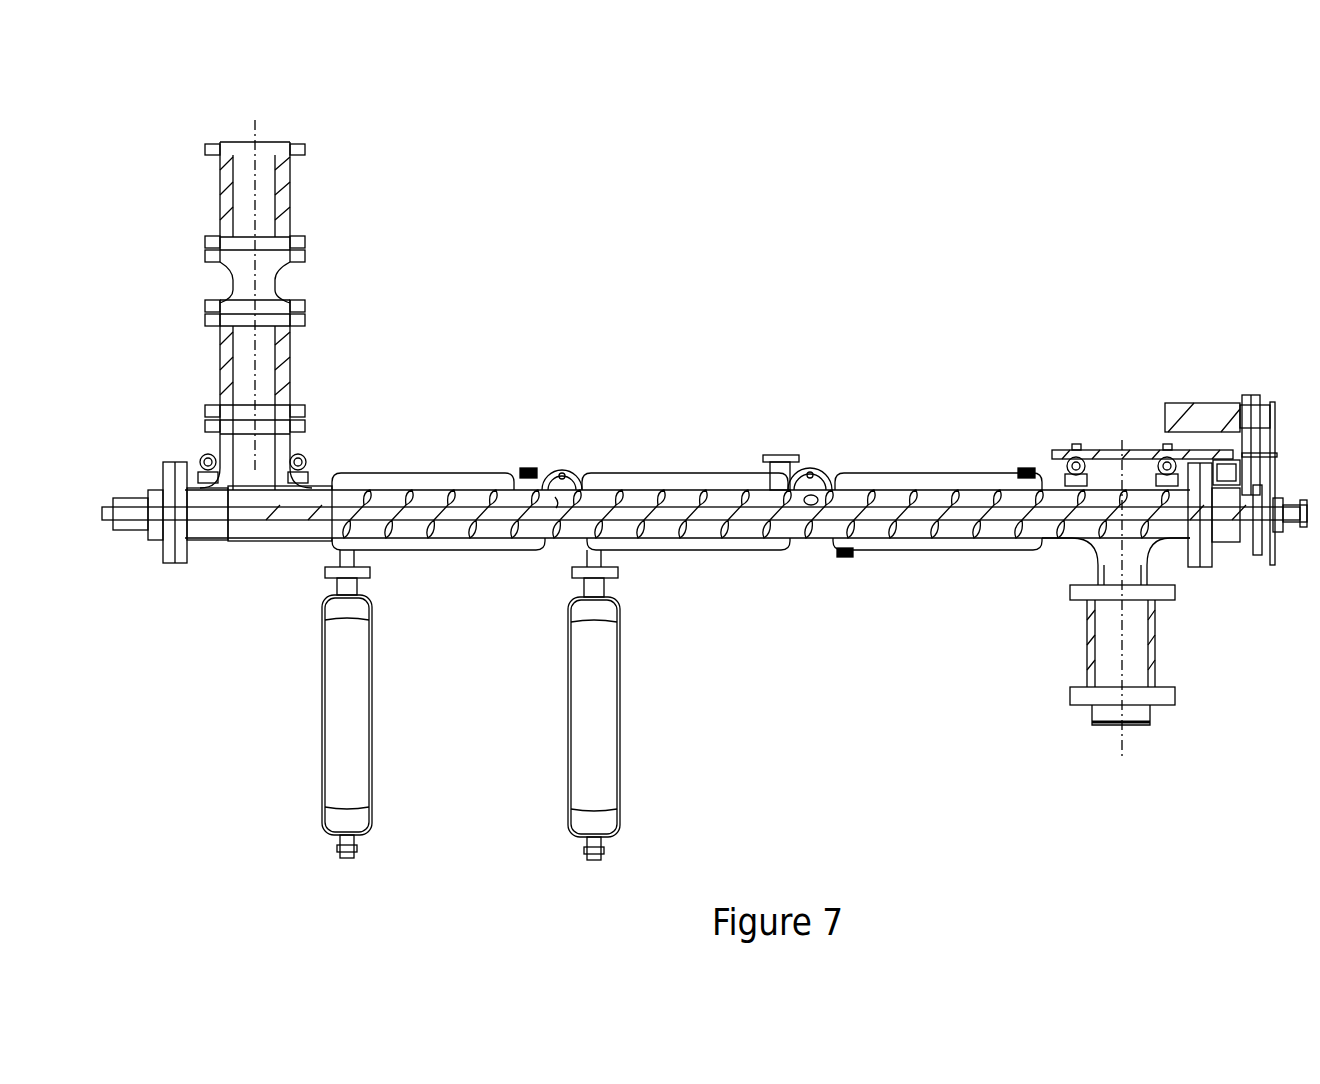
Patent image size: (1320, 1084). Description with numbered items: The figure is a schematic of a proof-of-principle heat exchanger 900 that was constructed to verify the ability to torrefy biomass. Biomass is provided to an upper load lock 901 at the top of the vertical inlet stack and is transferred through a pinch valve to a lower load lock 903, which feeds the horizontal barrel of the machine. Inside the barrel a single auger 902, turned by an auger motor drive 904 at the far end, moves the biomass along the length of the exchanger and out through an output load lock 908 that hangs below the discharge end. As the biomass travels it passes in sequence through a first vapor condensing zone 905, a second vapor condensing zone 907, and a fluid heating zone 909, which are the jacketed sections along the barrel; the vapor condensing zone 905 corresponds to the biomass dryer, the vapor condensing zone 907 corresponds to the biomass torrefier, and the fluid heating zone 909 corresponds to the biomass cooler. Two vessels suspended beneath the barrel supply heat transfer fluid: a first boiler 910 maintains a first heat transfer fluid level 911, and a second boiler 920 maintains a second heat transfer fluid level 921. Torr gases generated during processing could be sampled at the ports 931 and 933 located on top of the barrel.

The heat exchanger 900 is at (530, 115).
The upper load lock 901 is at (290, 186).
The auger 902 is at (265, 527).
The lower load lock 903 is at (292, 373).
The auger motor drive 904 is at (1190, 397).
The vapor condensing zone 905 is at (380, 470).
The vapor condensing zone 907 is at (709, 473).
The output load lock 908 is at (1155, 650).
The fluid heating zone 909 is at (988, 555).
The first boiler 910 is at (318, 763).
The first heat transfer fluid level 911 is at (358, 668).
The second boiler 920 is at (622, 740).
The second heat transfer fluid level 921 is at (603, 667).
The port 931 is at (582, 462).
The port 933 is at (832, 462).